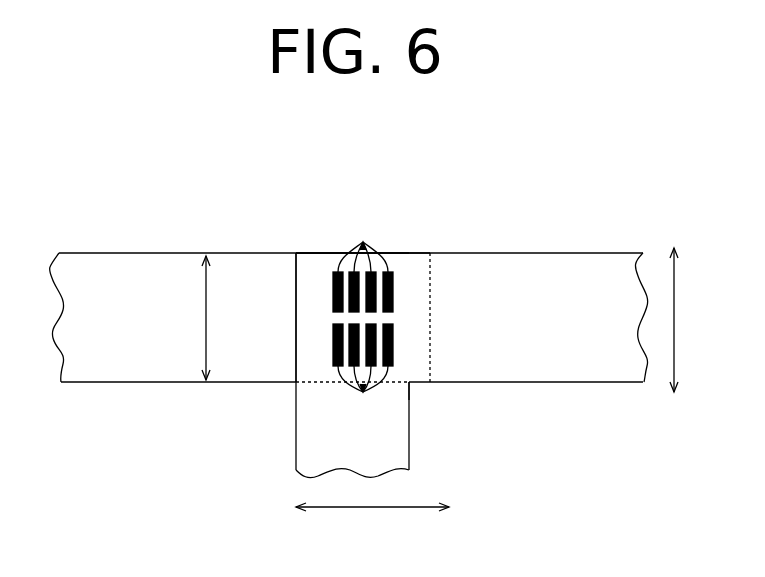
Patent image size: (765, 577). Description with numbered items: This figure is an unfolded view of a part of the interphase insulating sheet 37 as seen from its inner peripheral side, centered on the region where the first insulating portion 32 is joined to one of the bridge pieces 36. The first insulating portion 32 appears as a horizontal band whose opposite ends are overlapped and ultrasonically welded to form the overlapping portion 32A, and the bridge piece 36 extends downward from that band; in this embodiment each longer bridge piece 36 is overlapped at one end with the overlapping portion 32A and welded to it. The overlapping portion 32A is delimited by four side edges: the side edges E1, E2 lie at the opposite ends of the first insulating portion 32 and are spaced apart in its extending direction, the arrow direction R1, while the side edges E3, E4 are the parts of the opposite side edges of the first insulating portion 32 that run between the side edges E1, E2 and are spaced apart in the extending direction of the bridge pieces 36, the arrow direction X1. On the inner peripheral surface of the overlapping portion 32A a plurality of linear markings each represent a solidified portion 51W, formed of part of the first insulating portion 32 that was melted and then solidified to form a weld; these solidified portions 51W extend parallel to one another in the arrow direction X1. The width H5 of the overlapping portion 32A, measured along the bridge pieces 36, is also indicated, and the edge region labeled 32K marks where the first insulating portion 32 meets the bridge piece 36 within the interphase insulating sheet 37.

The first insulating portion 32 is at (177, 254).
The opening edge of substrate 32K is at (315, 258).
The overlapping portion 32A is at (423, 384).
The bridge pieces 36 is at (410, 442).
The interphase insulating sheet 37 is at (387, 372).
The solidified portion 51W is at (363, 318).
The side edge E1 is at (295, 281).
The side edge E2 is at (431, 280).
The side edge E3 is at (316, 384).
The side edge E4 is at (406, 253).
The width of the overlapping portion H5 is at (204, 317).
The arrow direction X1 is at (676, 322).
The arrow direction R1 is at (372, 509).